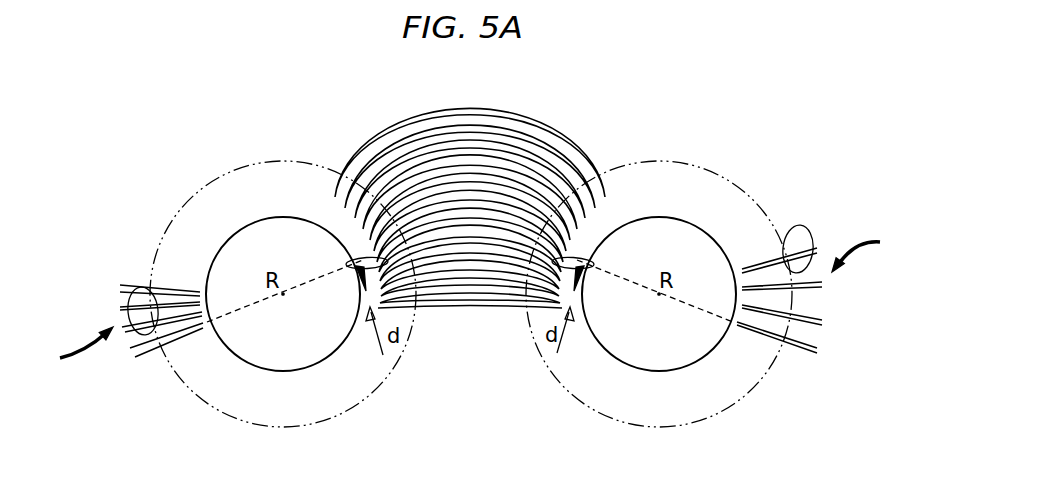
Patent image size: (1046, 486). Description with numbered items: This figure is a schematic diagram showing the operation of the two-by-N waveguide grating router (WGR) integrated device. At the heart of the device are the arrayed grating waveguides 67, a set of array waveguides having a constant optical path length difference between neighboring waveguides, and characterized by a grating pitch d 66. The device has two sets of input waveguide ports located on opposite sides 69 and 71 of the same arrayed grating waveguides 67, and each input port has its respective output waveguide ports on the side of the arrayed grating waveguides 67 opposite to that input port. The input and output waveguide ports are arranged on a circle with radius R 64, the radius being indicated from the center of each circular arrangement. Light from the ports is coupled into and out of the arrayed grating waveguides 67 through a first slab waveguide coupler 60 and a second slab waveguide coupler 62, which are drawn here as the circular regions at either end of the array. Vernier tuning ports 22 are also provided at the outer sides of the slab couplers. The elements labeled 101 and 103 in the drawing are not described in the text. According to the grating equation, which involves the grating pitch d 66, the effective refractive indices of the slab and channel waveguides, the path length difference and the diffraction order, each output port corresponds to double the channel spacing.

The vernier tuning ports 22 is at (130, 300).
The first slab waveguide coupler 60 is at (385, 382).
The second slab waveguide coupler 62 is at (548, 368).
The radius R 64 is at (278, 297).
The grating pitch d 66 is at (407, 338).
The arrayed grating waveguides 67 is at (437, 108).
The first side 69 is at (74, 351).
The second side 71 is at (871, 251).
The first roll 101 is at (275, 161).
The second roll 103 is at (688, 161).